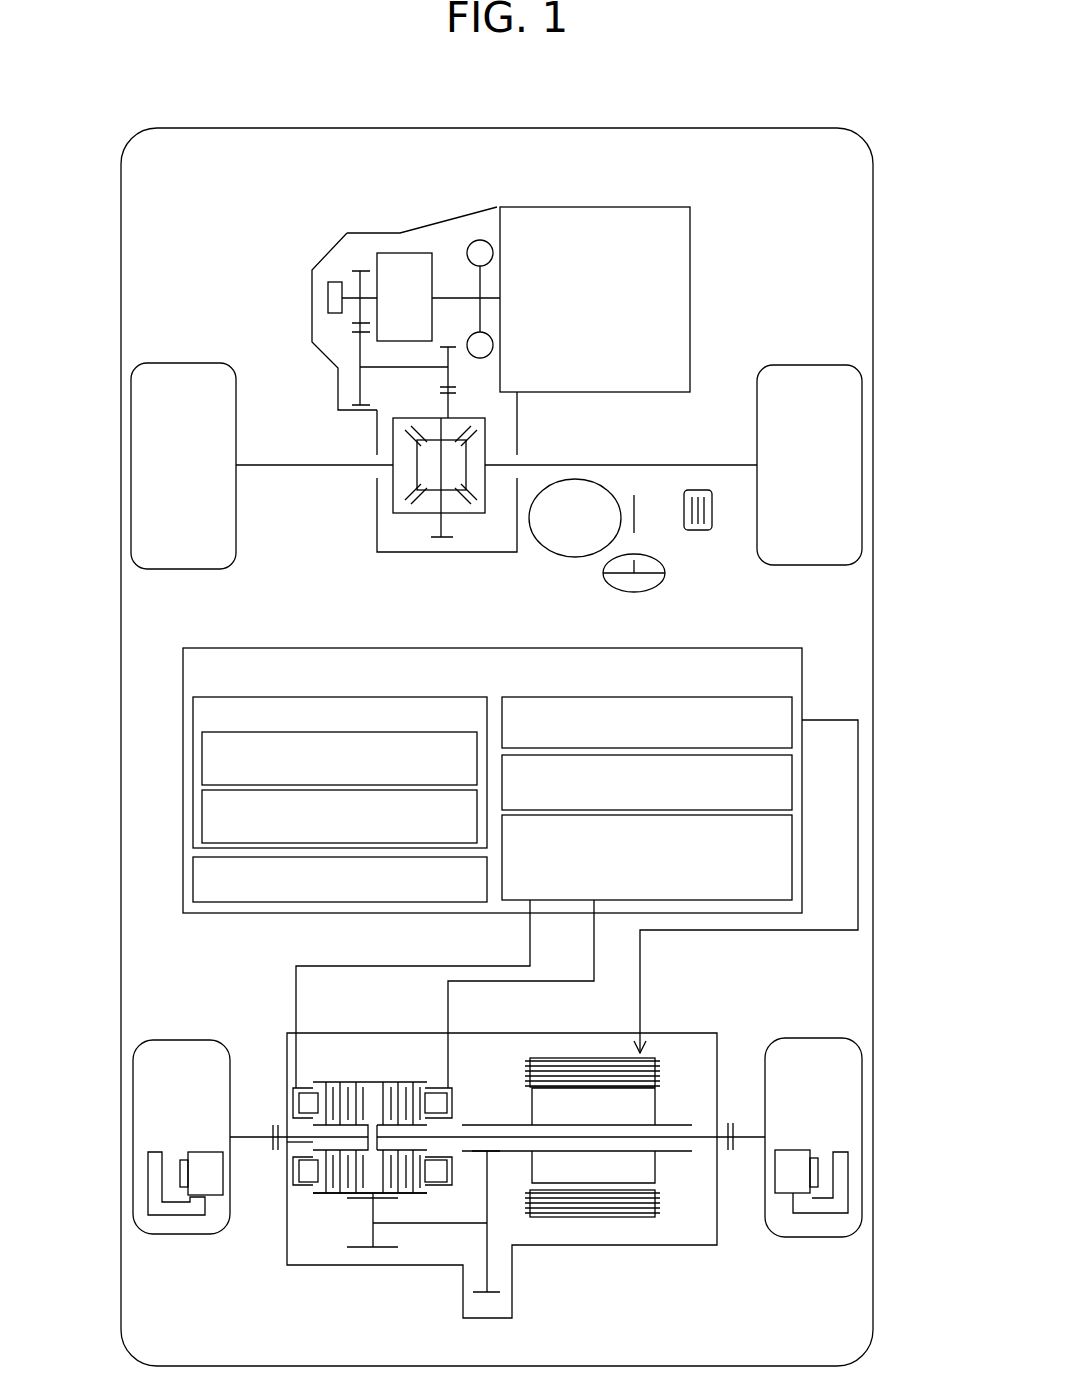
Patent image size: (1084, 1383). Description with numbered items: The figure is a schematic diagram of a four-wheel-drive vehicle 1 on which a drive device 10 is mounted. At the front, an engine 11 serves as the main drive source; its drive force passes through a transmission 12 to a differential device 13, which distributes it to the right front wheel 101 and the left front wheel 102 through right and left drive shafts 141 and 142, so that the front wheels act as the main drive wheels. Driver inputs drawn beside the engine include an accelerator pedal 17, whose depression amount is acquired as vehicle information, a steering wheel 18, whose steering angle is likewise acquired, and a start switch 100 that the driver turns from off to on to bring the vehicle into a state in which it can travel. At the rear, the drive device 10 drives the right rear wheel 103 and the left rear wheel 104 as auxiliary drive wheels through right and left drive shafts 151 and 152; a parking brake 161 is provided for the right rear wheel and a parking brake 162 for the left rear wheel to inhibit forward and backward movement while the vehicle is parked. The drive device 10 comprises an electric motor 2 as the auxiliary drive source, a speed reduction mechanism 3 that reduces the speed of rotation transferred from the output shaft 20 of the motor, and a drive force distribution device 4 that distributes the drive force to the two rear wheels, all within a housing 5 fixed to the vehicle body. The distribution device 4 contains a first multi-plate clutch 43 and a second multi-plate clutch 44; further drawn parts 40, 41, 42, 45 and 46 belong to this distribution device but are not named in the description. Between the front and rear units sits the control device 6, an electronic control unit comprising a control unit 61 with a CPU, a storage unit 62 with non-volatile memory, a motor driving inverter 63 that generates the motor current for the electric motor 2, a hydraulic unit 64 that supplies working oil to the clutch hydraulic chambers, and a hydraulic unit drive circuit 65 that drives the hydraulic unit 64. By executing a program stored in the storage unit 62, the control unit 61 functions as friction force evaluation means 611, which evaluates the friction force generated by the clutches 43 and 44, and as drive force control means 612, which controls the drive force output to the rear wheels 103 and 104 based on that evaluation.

The four-wheel-drive vehicle 1 is at (879, 127).
The engine 11 is at (629, 206).
The transmission 12 is at (368, 258).
The differential device 13 is at (424, 516).
The right drive shaft 141 is at (615, 463).
The left drive shaft 142 is at (324, 464).
The right front wheel 101 is at (862, 460).
The left front wheel 102 is at (131, 461).
The accelerator pedal 17 is at (714, 512).
The steering wheel 18 is at (665, 592).
The start switch 100 is at (557, 553).
The control device 6 is at (217, 647).
The control unit 61 is at (193, 708).
The friction force evaluation means 611 is at (202, 745).
The drive force control means 612 is at (202, 800).
The storage unit 62 is at (193, 870).
The motor driving inverter 63 is at (802, 707).
The hydraulic unit drive circuit 65 is at (792, 762).
The hydraulic unit 64 is at (792, 823).
The drive device 10 is at (729, 1243).
The right rear wheel 103 is at (862, 1125).
The left rear wheel 104 is at (133, 1127).
The parking brake 161 is at (800, 1149).
The parking brake 162 is at (198, 1151).
The right drive shaft 151 is at (745, 1133).
The left drive shaft 152 is at (263, 1133).
The rear axle shaft 41 is at (700, 1140).
The clutch input shaft 42 is at (293, 1142).
The drive force distribution device 4 is at (402, 1092).
The second multi-plate clutch 44 is at (356, 1084).
The first multi-plate clutch 43 is at (403, 1084).
The hydraulic piston 45 is at (458, 1077).
The clutch hub 46 is at (304, 1190).
The clutch drum 40 is at (333, 1194).
The speed reduction mechanism 3 is at (504, 1263).
The housing 5 is at (582, 1148).
The electric motor 2 is at (629, 1223).
The output shaft 20 is at (677, 1123).